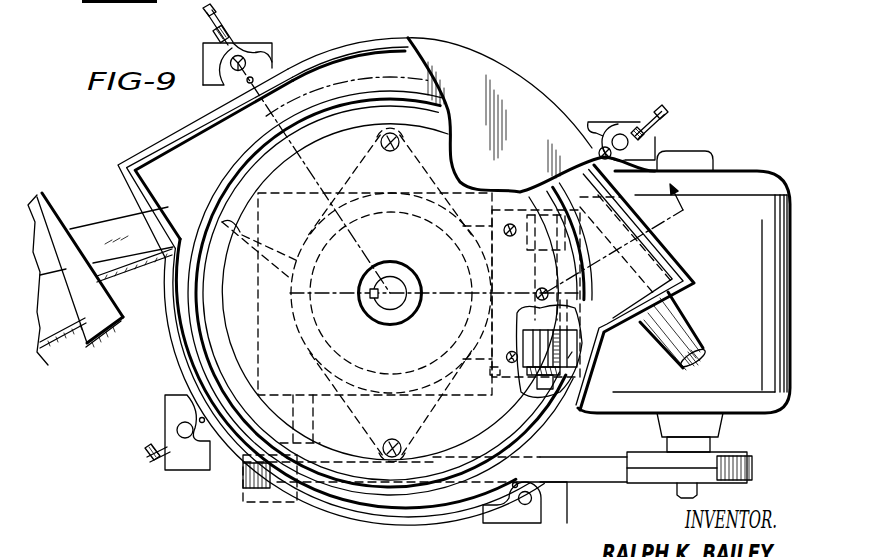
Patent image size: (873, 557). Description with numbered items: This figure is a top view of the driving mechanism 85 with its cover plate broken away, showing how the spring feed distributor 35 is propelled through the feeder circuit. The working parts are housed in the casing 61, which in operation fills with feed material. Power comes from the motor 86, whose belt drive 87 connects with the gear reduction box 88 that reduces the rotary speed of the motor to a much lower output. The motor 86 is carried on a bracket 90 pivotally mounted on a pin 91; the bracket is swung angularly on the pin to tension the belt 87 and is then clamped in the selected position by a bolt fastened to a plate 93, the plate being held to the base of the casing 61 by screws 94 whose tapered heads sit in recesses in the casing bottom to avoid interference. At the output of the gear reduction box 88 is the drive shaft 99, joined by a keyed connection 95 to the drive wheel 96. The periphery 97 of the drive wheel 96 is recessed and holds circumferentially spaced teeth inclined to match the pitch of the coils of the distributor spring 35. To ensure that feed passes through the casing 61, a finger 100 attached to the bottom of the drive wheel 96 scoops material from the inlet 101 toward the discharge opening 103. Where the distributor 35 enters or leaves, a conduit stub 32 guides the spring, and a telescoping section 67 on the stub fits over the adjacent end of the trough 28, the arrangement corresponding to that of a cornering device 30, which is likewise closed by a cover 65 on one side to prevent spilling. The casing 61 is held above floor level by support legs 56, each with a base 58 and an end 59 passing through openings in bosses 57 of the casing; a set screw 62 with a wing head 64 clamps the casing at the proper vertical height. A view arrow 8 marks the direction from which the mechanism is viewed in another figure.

The section line 8 is at (688, 205).
The trough 28 is at (55, 350).
The cornering device 30 is at (158, 131).
The conduit stub 32 is at (90, 220).
The spring feed distributor 35 is at (630, 258).
The support legs 56 is at (618, 134).
The bosses 57 is at (231, 62).
The base 58 is at (204, 84).
The end 59 is at (263, 50).
The casing 61 is at (386, 36).
The set screw 62 is at (233, 45).
The wing head 64 is at (205, 20).
The cover 65 is at (468, 60).
The telescoping section 67 is at (97, 290).
The driving mechanism 85 is at (707, 122).
The motor 86 is at (752, 175).
The belt drive 87 is at (613, 473).
The gear reduction box 88 is at (367, 347).
The bracket 90 is at (598, 345).
The pin 91 is at (570, 353).
The plate 93 is at (484, 366).
The screws 94 is at (507, 224).
The keyed connection 95 is at (371, 292).
The drive wheel 96 is at (232, 185).
The periphery 97 is at (383, 497).
The drive shaft 99 is at (402, 306).
The finger 100 is at (232, 240).
The inlet 101 is at (113, 208).
The discharge opening 103 is at (685, 316).